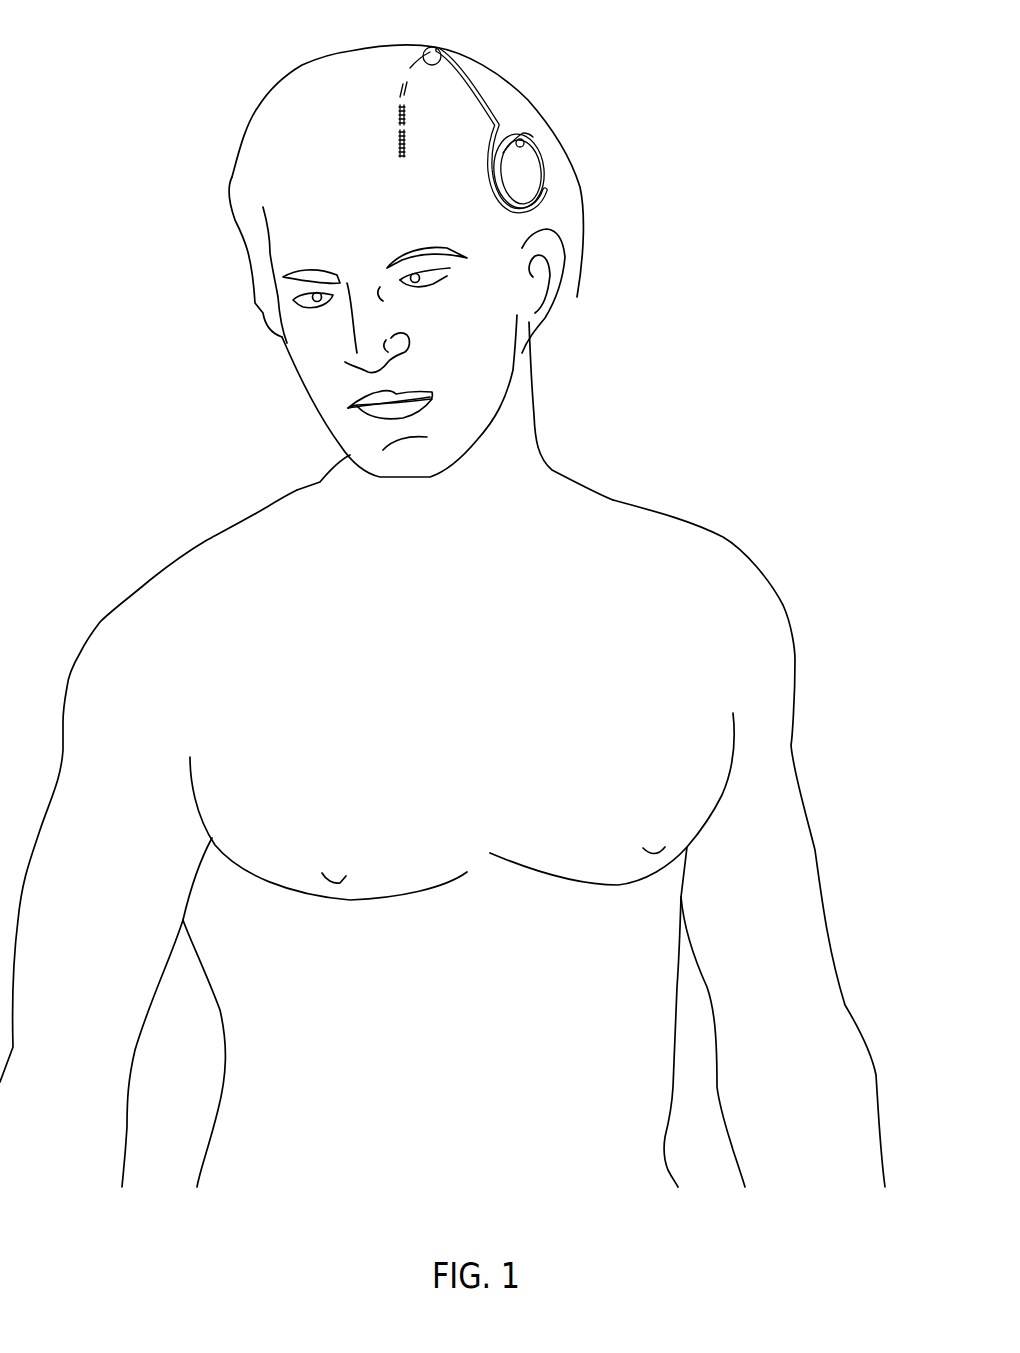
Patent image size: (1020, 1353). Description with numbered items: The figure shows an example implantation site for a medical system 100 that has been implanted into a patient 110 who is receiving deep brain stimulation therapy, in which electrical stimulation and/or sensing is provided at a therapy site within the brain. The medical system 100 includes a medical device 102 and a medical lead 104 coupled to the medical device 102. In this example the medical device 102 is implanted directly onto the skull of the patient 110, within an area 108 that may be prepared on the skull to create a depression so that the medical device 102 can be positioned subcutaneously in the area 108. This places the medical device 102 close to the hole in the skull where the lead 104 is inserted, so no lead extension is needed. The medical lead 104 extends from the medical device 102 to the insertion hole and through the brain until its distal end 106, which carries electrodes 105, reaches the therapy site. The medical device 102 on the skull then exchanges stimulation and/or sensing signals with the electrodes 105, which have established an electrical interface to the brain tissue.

The medical system 100 is at (570, 138).
The medical device 102 is at (528, 183).
The medical lead 104 is at (470, 78).
The electrodes 105 is at (400, 153).
The distal end 106 is at (283, 108).
The area 108 is at (558, 195).
The patient 110 is at (294, 490).